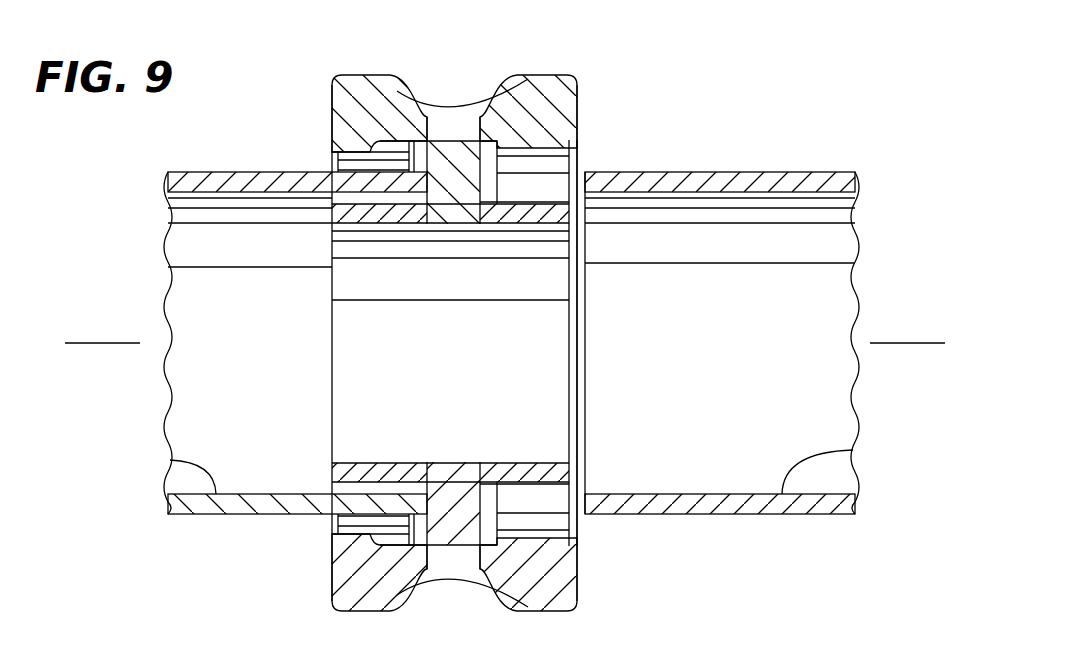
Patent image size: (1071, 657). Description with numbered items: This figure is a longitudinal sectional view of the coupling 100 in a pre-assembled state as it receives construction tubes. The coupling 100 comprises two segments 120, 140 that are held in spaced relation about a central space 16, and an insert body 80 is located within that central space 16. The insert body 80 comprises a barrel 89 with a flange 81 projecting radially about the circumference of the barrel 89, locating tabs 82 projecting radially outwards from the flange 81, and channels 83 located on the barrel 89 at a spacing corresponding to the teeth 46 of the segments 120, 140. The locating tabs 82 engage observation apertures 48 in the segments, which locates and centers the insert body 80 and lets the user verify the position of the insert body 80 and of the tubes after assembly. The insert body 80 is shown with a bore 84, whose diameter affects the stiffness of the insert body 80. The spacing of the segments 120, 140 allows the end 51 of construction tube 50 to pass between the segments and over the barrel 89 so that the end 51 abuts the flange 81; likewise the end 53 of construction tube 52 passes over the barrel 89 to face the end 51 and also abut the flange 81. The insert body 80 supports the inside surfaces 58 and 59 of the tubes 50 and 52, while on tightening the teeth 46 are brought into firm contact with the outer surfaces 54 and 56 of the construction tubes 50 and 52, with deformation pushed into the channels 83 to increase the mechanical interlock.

The central space 16 is at (472, 368).
The teeth 46 is at (365, 150).
The observation apertures 48 is at (430, 110).
The construction tube 50 is at (245, 376).
The end of construction tube 50 51 is at (397, 196).
The construction tube 52 is at (805, 321).
The end of construction tube 52 53 is at (582, 306).
The outer surface of construction tube 50 54 is at (235, 515).
The outer surface of construction tube 52 56 is at (806, 515).
The inside surface of tube 50 58 is at (850, 451).
The inside surface of tube 52 59 is at (180, 458).
The insert body 80 is at (568, 372).
The flange 81 is at (487, 194).
The locating tabs 82 is at (450, 177).
The channels 83 is at (582, 237).
The bore 84 is at (433, 419).
The barrel 89 is at (580, 462).
The coupling 100 is at (327, 114).
The segment 120 is at (541, 87).
The segment 140 is at (541, 582).